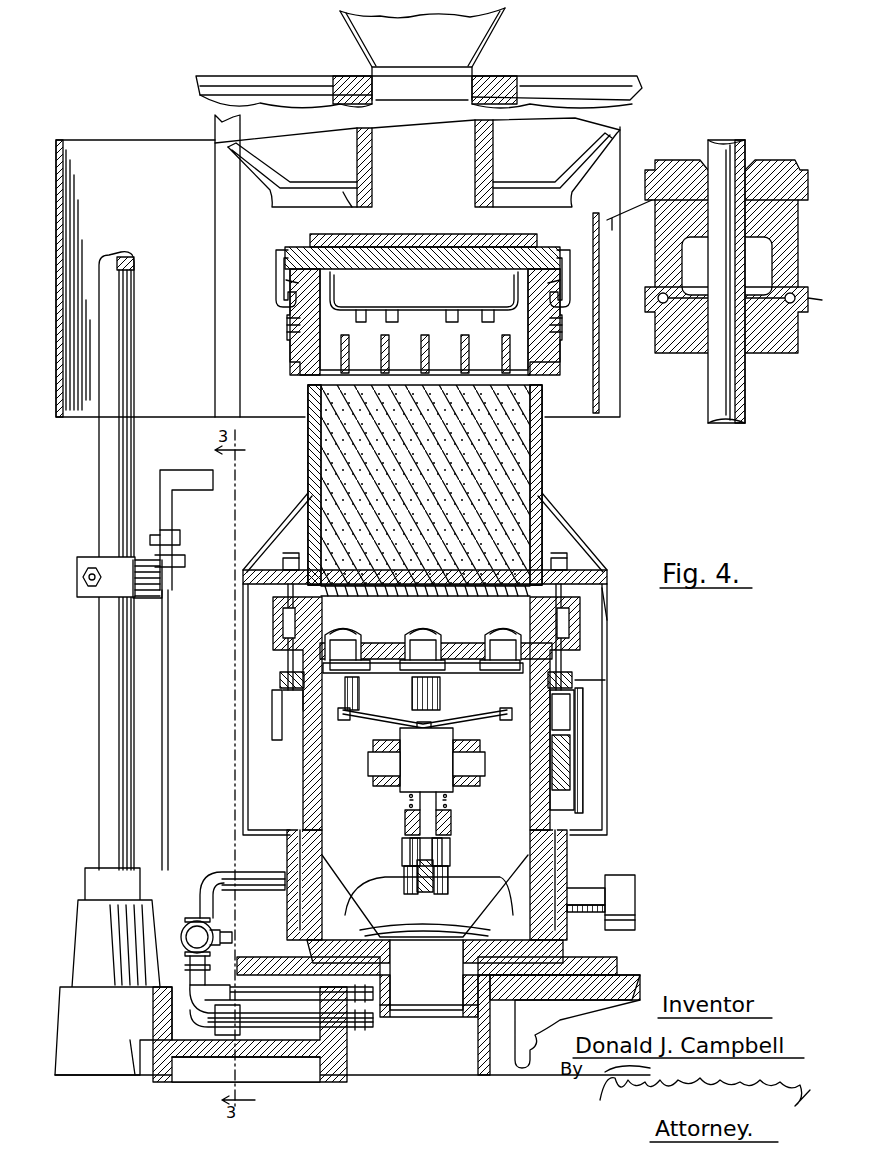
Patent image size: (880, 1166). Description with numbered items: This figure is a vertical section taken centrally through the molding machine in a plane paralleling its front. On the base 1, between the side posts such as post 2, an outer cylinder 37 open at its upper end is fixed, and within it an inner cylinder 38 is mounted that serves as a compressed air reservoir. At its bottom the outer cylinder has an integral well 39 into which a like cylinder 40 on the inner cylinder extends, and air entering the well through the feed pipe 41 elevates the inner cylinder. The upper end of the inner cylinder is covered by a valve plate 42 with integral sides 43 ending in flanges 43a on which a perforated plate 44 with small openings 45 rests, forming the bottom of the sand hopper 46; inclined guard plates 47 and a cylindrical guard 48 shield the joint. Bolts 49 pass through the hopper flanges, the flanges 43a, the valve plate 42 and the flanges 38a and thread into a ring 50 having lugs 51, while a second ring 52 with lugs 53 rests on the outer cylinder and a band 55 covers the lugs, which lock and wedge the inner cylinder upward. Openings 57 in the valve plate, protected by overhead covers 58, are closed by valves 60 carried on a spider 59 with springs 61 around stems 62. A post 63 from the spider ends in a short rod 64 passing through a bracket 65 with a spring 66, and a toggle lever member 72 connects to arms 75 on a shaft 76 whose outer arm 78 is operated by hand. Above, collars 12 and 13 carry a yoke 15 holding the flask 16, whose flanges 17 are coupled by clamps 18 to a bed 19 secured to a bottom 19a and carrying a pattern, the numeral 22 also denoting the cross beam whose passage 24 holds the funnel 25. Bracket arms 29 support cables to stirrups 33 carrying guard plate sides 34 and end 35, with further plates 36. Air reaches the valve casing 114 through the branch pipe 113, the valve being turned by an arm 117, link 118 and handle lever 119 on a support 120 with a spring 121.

The base 1 is at (205, 1050).
The post 2 is at (106, 786).
The collar 12 is at (770, 337).
The collar 13 is at (673, 195).
The yoke 15 is at (624, 206).
The flask 16 is at (312, 343).
The flange 17 is at (562, 282).
The clamp 18 is at (568, 275).
The bed 19 is at (491, 250).
The bottom 19a is at (428, 244).
The cross beam 22 is at (578, 90).
The vertical passage 24 is at (462, 160).
The funnel 25 is at (480, 46).
The bracket arm 29 is at (718, 360).
The stirrup member 33 is at (216, 208).
The guard plate side 34 is at (86, 420).
The guard plate end 35 is at (60, 253).
The guard plate 36 is at (600, 392).
The outer cylinder 37 is at (572, 860).
The inner cylinder 38 is at (560, 815).
The flange 38a is at (612, 675).
The well 39 is at (472, 1045).
The cylinder 40 is at (442, 1010).
The feed pipe 41 is at (297, 1025).
The valve plate 42 is at (572, 642).
The side 43 is at (568, 622).
The flange 43a is at (610, 598).
The perforated plate 44 is at (565, 562).
The opening 45 is at (356, 626).
The sand hopper 46 is at (535, 485).
The inclined guard plate 47 is at (555, 523).
The cylindrical guard 48 is at (600, 735).
The bolt 49 is at (290, 623).
The ring 50 is at (282, 680).
The lug 51 is at (305, 700).
The second ring 52 is at (580, 770).
The lug 53 is at (568, 725).
The band 55 is at (585, 722).
The opening 57 is at (478, 648).
The overhead cover 58 is at (370, 632).
The spider 59 is at (308, 720).
The valve 60 is at (410, 670).
The spring 61 is at (358, 690).
The stem 62 is at (348, 722).
The post 63 is at (412, 790).
The short rod 64 is at (400, 832).
The bracket 65 is at (452, 828).
The spring 66 is at (440, 800).
The toggle lever member 72 is at (408, 872).
The arm 75 is at (452, 856).
The shaft 76 is at (586, 912).
The arm 78 is at (612, 918).
The branch pipe 113 is at (250, 878).
The valve casing 114 is at (188, 946).
The arm 117 is at (152, 925).
The link 118 is at (160, 688).
The handle lever 119 is at (168, 510).
The support 120 is at (120, 573).
The spring 121 is at (135, 560).